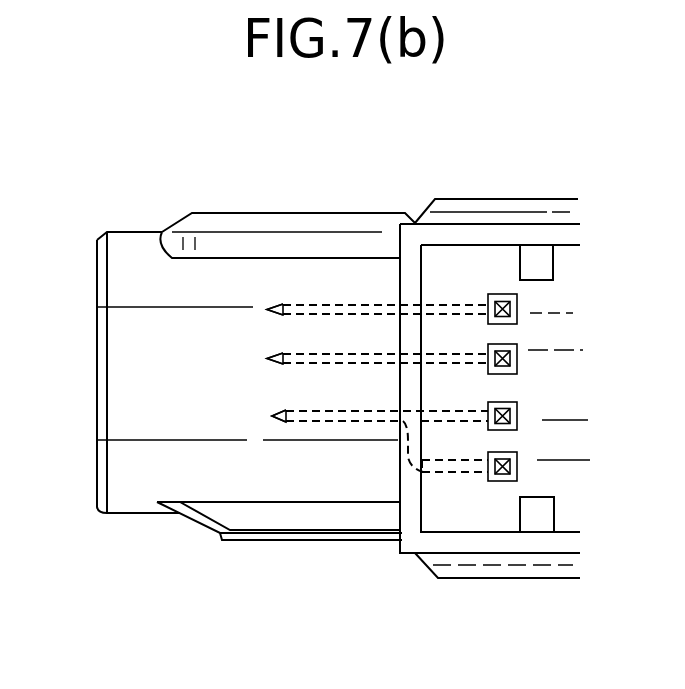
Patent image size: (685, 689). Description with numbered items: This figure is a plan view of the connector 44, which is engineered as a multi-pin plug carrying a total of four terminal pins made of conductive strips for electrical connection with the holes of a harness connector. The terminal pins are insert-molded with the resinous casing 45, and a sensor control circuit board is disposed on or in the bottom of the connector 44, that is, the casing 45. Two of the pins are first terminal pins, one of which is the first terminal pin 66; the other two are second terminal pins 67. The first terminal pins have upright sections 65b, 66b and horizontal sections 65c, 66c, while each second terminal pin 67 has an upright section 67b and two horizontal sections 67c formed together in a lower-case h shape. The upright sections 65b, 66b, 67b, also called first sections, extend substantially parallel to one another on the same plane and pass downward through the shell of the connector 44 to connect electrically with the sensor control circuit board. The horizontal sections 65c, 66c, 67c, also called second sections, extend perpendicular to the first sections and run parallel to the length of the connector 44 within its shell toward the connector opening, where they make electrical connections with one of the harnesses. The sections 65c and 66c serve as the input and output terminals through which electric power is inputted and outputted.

The connector 44 is at (125, 515).
The resinous casing 45 is at (267, 200).
The second terminal pin 67 is at (470, 235).
The upright section 67b is at (581, 334).
The horizontal sections 67c is at (267, 308).
The upright section 65b is at (512, 415).
The horizontal section 65c is at (267, 413).
The first terminal pin 66 is at (532, 519).
The upright section 66b is at (512, 467).
The horizontal section 66c is at (202, 412).